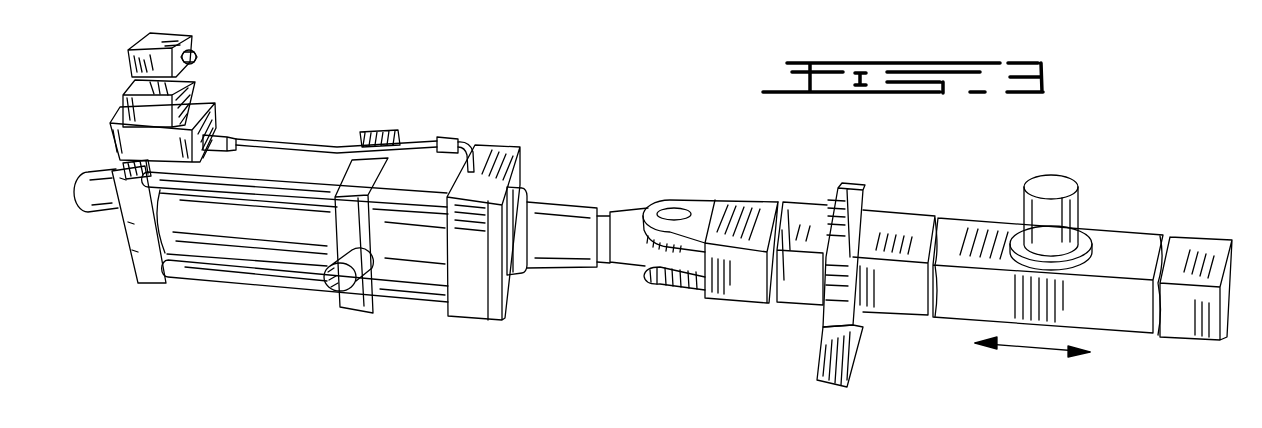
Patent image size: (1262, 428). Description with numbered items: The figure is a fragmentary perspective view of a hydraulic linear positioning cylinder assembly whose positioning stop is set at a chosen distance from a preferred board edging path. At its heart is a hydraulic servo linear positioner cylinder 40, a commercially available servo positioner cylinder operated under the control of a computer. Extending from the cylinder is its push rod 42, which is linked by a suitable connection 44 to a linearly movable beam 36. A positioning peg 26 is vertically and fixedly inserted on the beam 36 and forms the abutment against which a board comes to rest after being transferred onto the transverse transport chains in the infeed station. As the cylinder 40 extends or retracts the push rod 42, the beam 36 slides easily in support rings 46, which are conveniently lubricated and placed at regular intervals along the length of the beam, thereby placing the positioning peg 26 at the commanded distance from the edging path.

The positioning peg 26 is at (1053, 185).
The linearly movable beam 36 is at (1130, 245).
The hydraulic servo linear positioner cylinder 40 is at (277, 208).
The push rod 42 is at (605, 220).
The connection 44 is at (672, 212).
The support ring 46 is at (855, 192).